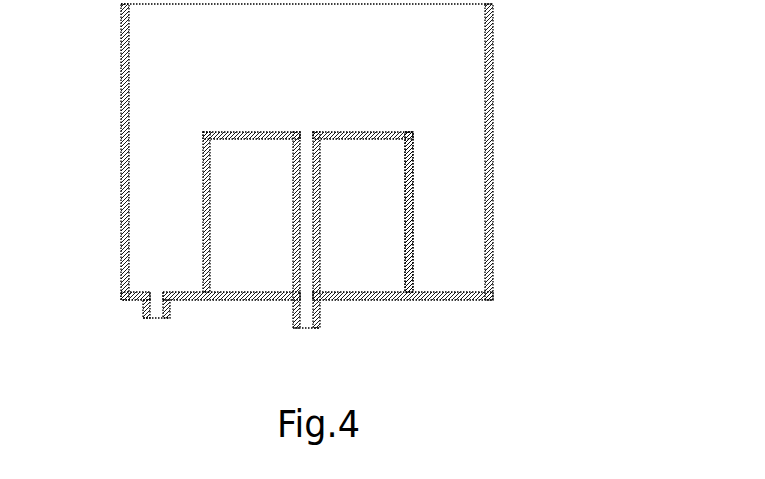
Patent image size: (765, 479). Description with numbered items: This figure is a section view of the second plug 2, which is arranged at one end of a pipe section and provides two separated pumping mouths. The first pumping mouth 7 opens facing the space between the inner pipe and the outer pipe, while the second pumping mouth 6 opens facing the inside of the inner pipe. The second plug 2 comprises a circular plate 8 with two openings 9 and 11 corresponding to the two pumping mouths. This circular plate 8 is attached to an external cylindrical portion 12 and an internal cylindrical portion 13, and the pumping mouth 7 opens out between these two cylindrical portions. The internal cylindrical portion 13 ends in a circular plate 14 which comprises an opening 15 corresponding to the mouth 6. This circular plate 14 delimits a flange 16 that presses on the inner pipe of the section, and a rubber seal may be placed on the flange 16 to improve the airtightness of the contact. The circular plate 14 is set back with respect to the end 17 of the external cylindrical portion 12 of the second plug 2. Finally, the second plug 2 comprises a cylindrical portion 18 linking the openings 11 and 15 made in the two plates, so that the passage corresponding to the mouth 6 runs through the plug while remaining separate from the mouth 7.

The second plug 2 is at (368, 185).
The second pumping mouth 6 is at (320, 311).
The first pumping mouth 7 is at (143, 312).
The circular plate 8 is at (238, 299).
The opening 9 is at (161, 282).
The opening 11 is at (313, 285).
The external cylindrical portion 12 is at (123, 210).
The internal cylindrical portion 13 is at (407, 241).
The circular plate 14 is at (243, 134).
The opening 15 is at (316, 122).
The flange 16 is at (204, 132).
The end of the external cylindrical portion 17 is at (522, 10).
The cylindrical portion 18 is at (297, 220).